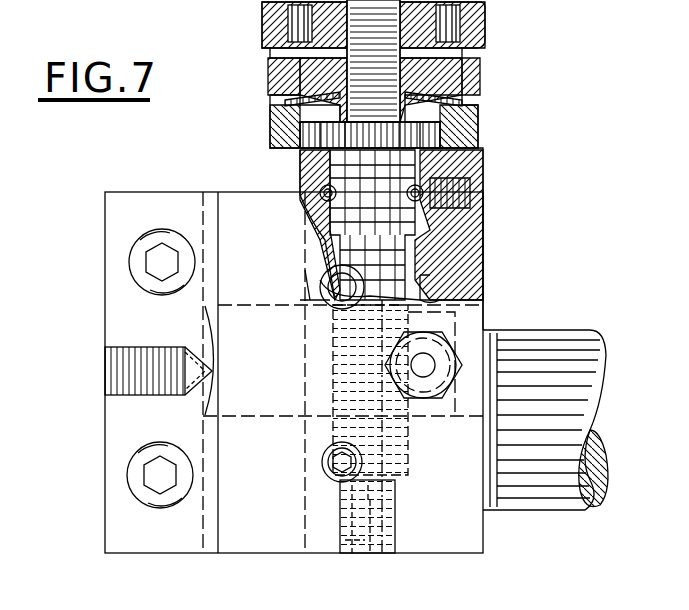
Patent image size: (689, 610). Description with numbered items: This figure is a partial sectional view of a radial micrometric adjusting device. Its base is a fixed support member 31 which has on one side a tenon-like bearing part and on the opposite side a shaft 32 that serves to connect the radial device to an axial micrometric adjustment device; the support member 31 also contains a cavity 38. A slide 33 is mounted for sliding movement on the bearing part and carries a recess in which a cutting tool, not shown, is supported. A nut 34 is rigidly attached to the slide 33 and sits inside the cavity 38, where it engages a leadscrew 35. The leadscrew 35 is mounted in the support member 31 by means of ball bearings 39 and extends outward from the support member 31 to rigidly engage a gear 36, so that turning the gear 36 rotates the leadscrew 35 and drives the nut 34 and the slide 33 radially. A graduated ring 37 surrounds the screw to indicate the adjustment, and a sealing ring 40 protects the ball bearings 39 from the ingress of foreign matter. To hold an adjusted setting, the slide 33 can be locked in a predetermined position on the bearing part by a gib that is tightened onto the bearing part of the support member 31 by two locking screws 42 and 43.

The fixed support member 31 is at (438, 556).
The shaft 32 is at (581, 347).
The slide 33 is at (240, 556).
The nut 34 is at (262, 410).
The leadscrew 35 is at (352, 556).
The gear 36 is at (470, 24).
The graduated ring 37 is at (468, 126).
The cavity 38 is at (413, 484).
The ball bearings 39 is at (305, 190).
The sealing ring 40 is at (300, 150).
The locking screw 42 is at (322, 290).
The locking screw 43 is at (320, 466).